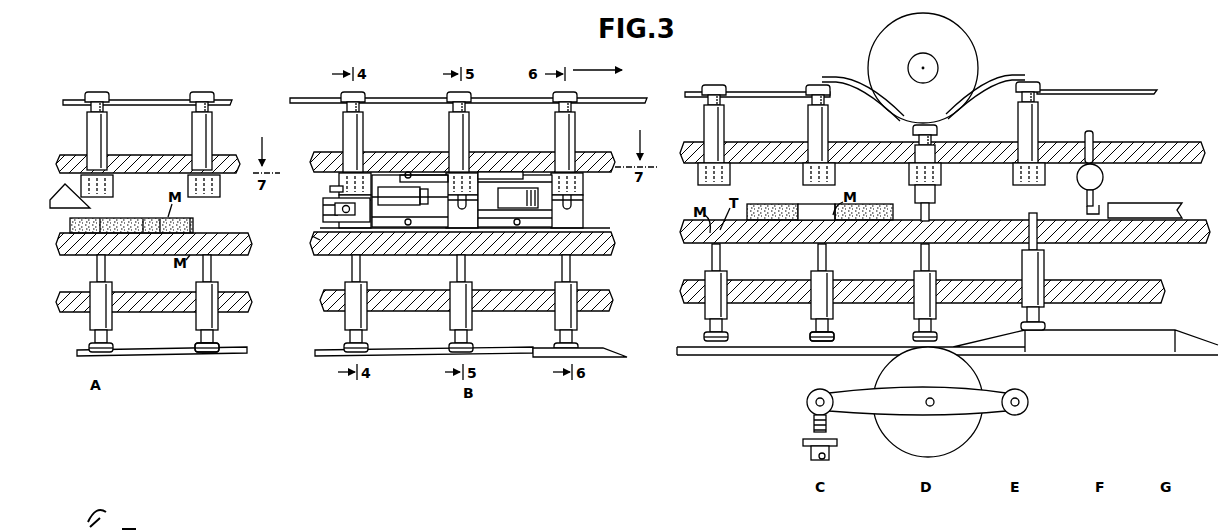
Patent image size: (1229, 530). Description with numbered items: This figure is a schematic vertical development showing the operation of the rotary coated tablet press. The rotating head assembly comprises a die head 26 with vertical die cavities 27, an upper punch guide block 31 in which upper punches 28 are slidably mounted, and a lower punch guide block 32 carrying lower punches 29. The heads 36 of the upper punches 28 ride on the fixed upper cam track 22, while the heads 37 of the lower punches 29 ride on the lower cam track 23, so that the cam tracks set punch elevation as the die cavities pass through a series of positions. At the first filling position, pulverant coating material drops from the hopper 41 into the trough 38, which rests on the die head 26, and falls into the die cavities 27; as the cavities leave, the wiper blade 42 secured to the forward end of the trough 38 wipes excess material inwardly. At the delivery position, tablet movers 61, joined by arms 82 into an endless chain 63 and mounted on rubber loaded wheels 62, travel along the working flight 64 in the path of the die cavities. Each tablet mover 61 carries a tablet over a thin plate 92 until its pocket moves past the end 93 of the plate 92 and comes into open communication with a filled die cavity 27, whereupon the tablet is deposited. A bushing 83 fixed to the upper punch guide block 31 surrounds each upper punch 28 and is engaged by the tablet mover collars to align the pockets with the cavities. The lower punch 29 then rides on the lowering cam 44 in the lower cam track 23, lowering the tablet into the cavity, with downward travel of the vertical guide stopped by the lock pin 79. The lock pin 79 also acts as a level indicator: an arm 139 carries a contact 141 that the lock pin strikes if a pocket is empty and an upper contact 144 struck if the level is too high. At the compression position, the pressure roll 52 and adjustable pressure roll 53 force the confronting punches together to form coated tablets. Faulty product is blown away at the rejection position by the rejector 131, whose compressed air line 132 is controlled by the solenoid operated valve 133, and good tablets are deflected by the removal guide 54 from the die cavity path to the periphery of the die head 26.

The upper cam track 22 is at (172, 102).
The heads of upper punches 36 is at (202, 91).
The upper punches 28 is at (103, 135).
The upper punch guide block 31 is at (177, 160).
The hopper 41 is at (90, 208).
The trough 38 is at (128, 218).
The wiper blade 42 is at (192, 224).
The die cavities 27 is at (108, 240).
The die head 26 is at (250, 245).
The lower punches 29 is at (112, 323).
The lower punch guide block 32 is at (153, 305).
The lower cam track 23 is at (187, 353).
The heads of lower punches 37 is at (203, 353).
The arms 82 is at (322, 188).
The bushing 83 is at (364, 170).
The upper contact 144 is at (330, 189).
The arm 139 is at (327, 203).
The contact 141 is at (327, 215).
The tablet movers 61 is at (313, 228).
The thin plate 92 is at (318, 246).
The end of plate 93 is at (372, 248).
The lock pin 79 is at (477, 247).
The working flight 64 is at (483, 170).
The endless chain 63 is at (498, 175).
The wheels 62 is at (523, 193).
The lowering cam 44 is at (533, 353).
The pressure roll 52 is at (875, 53).
The rejector 131 is at (1112, 107).
The solenoid operated valve 133 is at (1081, 183).
The compressed air line 132 is at (1087, 210).
The removal guide 54 is at (1148, 203).
The adjustable pressure roll 53 is at (977, 418).